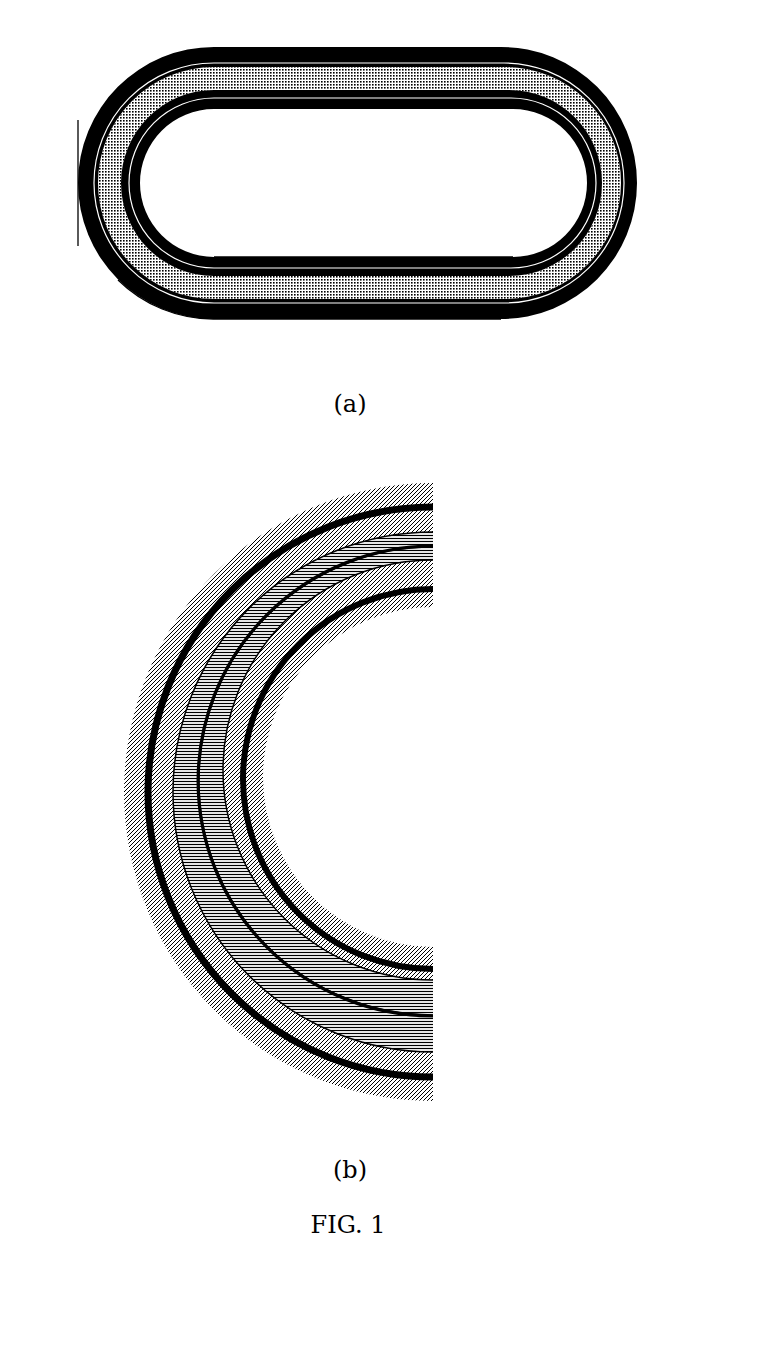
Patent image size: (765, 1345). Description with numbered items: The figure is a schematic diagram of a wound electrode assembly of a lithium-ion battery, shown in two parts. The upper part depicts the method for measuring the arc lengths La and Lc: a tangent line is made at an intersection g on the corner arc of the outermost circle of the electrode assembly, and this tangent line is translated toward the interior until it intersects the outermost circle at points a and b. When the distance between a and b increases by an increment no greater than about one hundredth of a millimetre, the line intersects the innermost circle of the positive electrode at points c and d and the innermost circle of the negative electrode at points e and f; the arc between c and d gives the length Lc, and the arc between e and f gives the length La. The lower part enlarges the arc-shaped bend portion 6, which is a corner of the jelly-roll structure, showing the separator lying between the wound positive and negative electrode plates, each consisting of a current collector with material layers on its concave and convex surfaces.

The arc-shaped bend portion 6 is at (433, 784).
The intersection point a is at (207, 256).
The intersection point b is at (354, 335).
The intersection point c is at (204, 108).
The intersection point d is at (204, 257).
The intersection point e is at (171, 54).
The intersection point f is at (177, 314).
The intersection point g is at (75, 45).